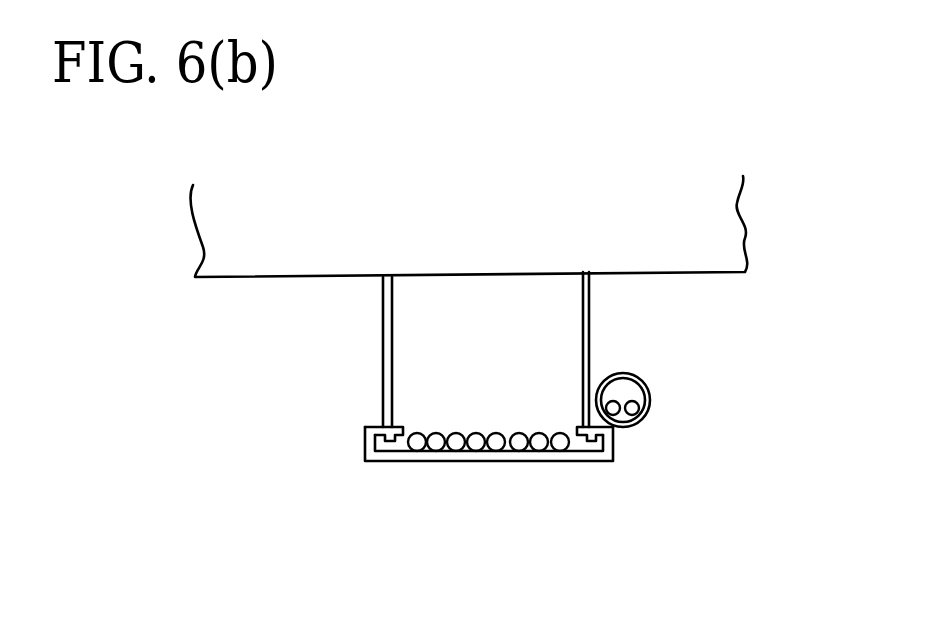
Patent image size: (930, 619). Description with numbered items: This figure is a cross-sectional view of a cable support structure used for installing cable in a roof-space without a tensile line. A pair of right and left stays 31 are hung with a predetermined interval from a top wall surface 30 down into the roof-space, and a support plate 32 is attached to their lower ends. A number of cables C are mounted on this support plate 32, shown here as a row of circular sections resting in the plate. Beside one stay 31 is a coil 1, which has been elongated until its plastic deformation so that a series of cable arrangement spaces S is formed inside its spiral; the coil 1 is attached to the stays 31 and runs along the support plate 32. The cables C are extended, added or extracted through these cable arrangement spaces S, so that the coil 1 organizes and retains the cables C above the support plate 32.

The top wall surface 30 is at (222, 279).
The stay 31 is at (383, 376).
The support plate 32 is at (580, 462).
The cable C is at (430, 460).
The cable arrangement space S is at (618, 393).
The coil 1 is at (648, 402).